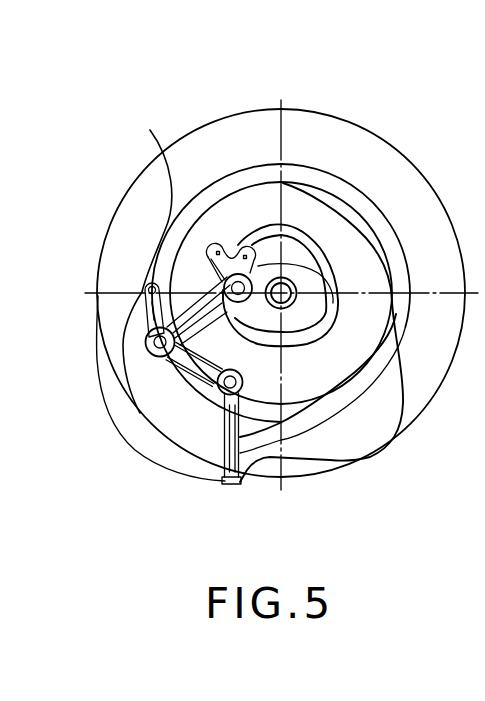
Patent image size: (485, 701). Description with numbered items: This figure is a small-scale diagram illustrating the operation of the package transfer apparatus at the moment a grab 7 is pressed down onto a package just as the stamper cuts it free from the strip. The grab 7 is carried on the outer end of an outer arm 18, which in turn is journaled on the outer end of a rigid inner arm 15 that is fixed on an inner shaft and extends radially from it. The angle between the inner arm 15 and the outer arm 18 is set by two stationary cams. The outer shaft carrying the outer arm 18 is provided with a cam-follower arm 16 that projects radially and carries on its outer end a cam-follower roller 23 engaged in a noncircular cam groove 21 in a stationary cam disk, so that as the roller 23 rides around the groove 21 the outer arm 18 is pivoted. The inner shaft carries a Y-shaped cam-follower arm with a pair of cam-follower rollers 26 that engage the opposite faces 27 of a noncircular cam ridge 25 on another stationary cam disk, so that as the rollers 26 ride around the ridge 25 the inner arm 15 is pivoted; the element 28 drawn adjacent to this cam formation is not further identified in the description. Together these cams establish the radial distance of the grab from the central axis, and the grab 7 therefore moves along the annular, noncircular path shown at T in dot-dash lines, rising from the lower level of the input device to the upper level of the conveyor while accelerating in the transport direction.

The grab 7 is at (223, 428).
The inner arm 15 is at (155, 282).
The cam-follower arm 16 is at (146, 353).
The outer arm 18 is at (196, 364).
The cam groove 21 is at (247, 173).
The cam-follower roller 23 is at (147, 283).
The cam ridge 25 is at (294, 279).
The cam-follower rollers 26 is at (209, 245).
The faces of the cam ridge 27 is at (320, 249).
The cam outer contour 28 is at (339, 293).
The path of the grabs T is at (446, 201).